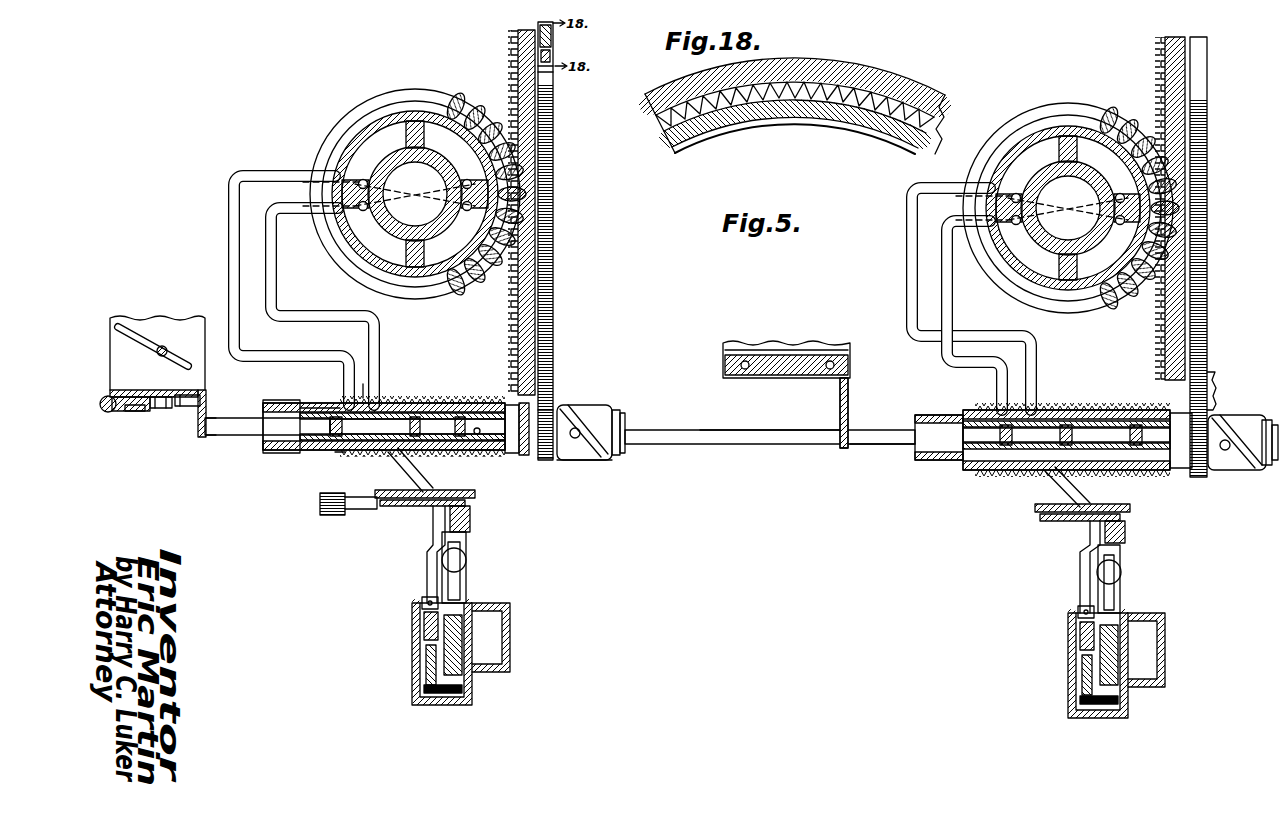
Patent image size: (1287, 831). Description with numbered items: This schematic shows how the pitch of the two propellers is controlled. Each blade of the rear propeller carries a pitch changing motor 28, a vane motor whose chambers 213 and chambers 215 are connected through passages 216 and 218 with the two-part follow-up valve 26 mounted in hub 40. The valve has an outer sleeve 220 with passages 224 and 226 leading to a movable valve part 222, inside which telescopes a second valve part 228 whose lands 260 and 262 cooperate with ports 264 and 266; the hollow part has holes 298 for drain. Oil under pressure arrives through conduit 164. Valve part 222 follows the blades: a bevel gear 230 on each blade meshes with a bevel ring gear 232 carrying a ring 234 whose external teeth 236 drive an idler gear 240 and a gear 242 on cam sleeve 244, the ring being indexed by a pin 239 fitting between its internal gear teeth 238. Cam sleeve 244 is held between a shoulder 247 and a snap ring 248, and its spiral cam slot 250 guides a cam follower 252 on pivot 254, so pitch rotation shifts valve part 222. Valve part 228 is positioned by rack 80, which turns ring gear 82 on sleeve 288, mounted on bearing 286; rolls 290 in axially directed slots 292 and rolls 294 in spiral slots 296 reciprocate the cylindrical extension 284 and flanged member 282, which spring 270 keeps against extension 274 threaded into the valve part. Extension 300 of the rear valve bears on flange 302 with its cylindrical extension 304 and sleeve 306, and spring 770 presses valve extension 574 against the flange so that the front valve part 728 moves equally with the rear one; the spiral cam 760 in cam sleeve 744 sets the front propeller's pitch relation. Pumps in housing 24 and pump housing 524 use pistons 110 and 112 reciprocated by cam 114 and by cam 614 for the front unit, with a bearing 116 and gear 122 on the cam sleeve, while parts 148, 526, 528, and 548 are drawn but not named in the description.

In FIG. 5, the housing 24 is at (450, 706).
In FIG. 5, the two-part follow-up valve 26 is at (308, 452).
In FIG. 5, the pitch changing motor 28 is at (380, 172).
In FIG. 5, the hub 40 is at (448, 400).
In FIG. 5, the rack 80 is at (118, 411).
In FIG. 5, the ring gear 82 is at (120, 394).
In FIG. 5, the piston 110 is at (482, 607).
In FIG. 5, the piston 112 is at (470, 653).
In FIG. 5, the cam 114 is at (468, 530).
In FIG. 5, the bearing 116 is at (469, 511).
In FIG. 5, the gear 122 is at (335, 517).
In FIG. 5, the valve cap 148 is at (415, 602).
In FIG. 5, the conduit 164 is at (410, 469).
In FIG. 5, the chambers 213 is at (430, 138).
In FIG. 5, the chambers 215 is at (372, 140).
In FIG. 5, the passage 216 is at (317, 362).
In FIG. 5, the passage 218 is at (380, 344).
In FIG. 5, the outer sleeve 220 is at (505, 457).
In FIG. 5, the movable valve part 222 is at (480, 460).
In FIG. 5, the passage 224 is at (337, 405).
In FIG. 5, the passage 226 is at (430, 388).
In FIG. 5, the valve part 228 is at (392, 430).
In FIG. 5, the bevel gear 230 is at (481, 102).
In FIG. 18, the bevel ring gear 232 is at (647, 132).
In FIG. 5, the bevel ring gear 232 is at (507, 68).
In FIG. 18, the ring 234 is at (928, 98).
In FIG. 5, the ring 234 is at (551, 84).
In FIG. 5, the teeth 236 is at (552, 290).
In FIG. 18, the internal gear teeth 238 is at (865, 79).
In FIG. 5, the internal gear teeth 238 is at (554, 36).
In FIG. 18, the pin 239 is at (777, 108).
In FIG. 5, the pin 239 is at (554, 44).
In FIG. 5, the idler gear 240 is at (545, 411).
In FIG. 5, the gear 242 is at (576, 420).
In FIG. 5, the cam sleeve 244 is at (594, 408).
In FIG. 5, the shoulder 247 is at (564, 423).
In FIG. 5, the snap ring 248 is at (620, 462).
In FIG. 5, the spiral cam slot 250 is at (592, 462).
In FIG. 5, the cam follower 252 is at (581, 432).
In FIG. 5, the pivot 254 is at (640, 436).
In FIG. 5, the land 260 is at (375, 452).
In FIG. 5, the land 262 is at (458, 448).
In FIG. 5, the port 264 is at (363, 396).
In FIG. 5, the port 266 is at (452, 437).
In FIG. 5, the spring 270 is at (512, 413).
In FIG. 5, the extension 274 is at (238, 434).
In FIG. 5, the flanged member 282 is at (201, 420).
In FIG. 5, the cylindrical extension 284 is at (188, 334).
In FIG. 5, the bearing 286 is at (133, 411).
In FIG. 5, the sleeve 288 is at (140, 397).
In FIG. 5, the rolls 290 is at (160, 400).
In FIG. 5, the axially directed slots 292 is at (203, 398).
In FIG. 5, the rolls 294 is at (163, 348).
In FIG. 5, the spiral slots 296 is at (138, 328).
In FIG. 5, the holes 298 is at (477, 428).
In FIG. 5, the extension 300 is at (788, 445).
In FIG. 5, the flange 302 is at (849, 418).
In FIG. 5, the cylindrical extension 304 is at (790, 375).
In FIG. 5, the sleeve 306 is at (750, 352).
In FIG. 5, the pump housing 524 is at (1108, 722).
In FIG. 5, the cylinder 526 is at (1025, 468).
In FIG. 5, the worm wheel 528 is at (1050, 160).
In FIG. 5, the valve cap 548 is at (1078, 614).
In FIG. 5, the valve extension 574 is at (878, 445).
In FIG. 5, the cam 614 is at (1128, 534).
In FIG. 5, the valve part 728 is at (1065, 438).
In FIG. 5, the cam sleeve 744 is at (1244, 468).
In FIG. 5, the spiral cam 760 is at (1240, 420).
In FIG. 5, the spring 770 is at (1163, 462).